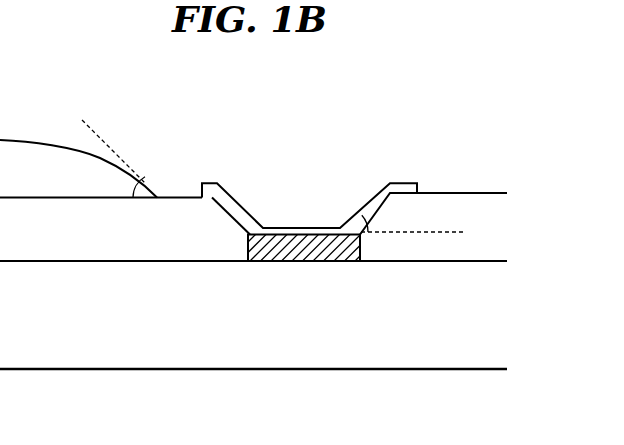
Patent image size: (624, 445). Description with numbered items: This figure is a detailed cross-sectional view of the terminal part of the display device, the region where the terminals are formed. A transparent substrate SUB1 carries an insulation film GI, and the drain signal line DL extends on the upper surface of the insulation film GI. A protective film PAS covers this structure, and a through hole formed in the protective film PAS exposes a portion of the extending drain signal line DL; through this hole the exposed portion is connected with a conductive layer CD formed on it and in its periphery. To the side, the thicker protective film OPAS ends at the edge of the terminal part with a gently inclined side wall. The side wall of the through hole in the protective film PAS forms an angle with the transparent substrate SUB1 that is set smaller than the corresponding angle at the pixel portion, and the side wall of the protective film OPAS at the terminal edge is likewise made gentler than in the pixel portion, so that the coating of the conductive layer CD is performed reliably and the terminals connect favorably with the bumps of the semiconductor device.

The protective film OPAS is at (40, 152).
The protective film PAS is at (180, 210).
The conductive layer CD is at (246, 206).
The drain signal line DL is at (318, 257).
The insulation film GI is at (253, 304).
The transparent substrate SUB1 is at (253, 385).